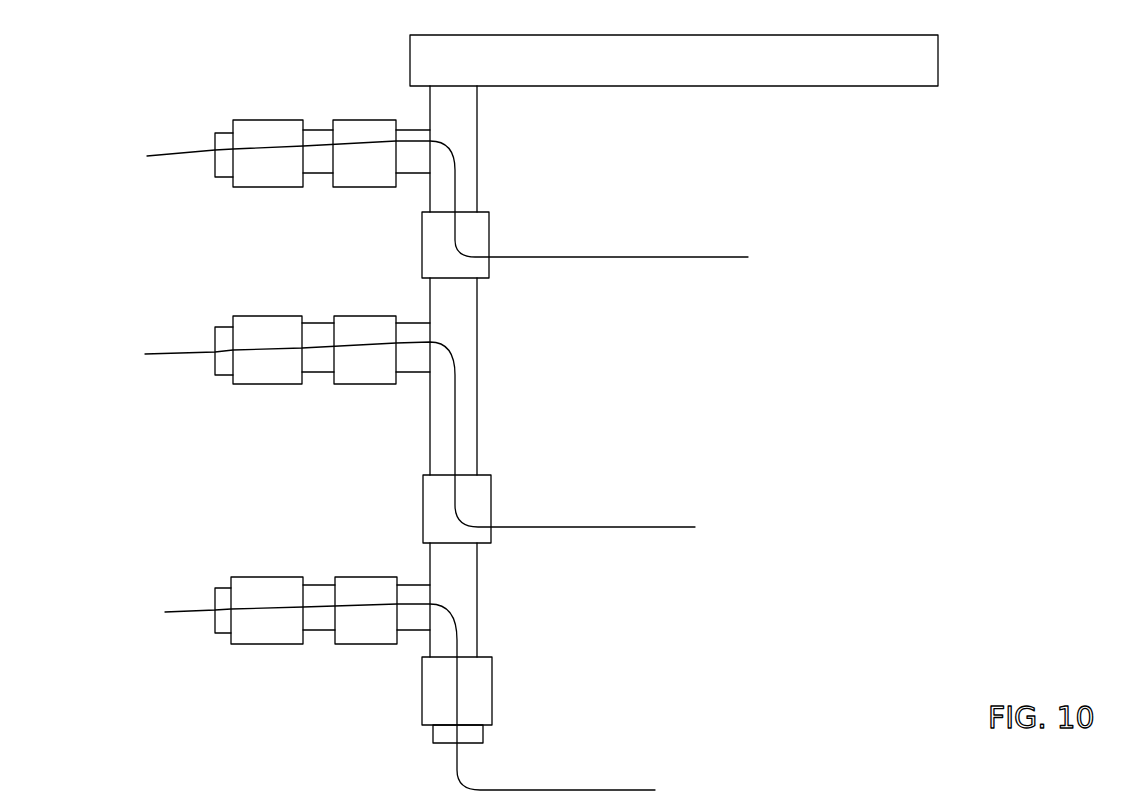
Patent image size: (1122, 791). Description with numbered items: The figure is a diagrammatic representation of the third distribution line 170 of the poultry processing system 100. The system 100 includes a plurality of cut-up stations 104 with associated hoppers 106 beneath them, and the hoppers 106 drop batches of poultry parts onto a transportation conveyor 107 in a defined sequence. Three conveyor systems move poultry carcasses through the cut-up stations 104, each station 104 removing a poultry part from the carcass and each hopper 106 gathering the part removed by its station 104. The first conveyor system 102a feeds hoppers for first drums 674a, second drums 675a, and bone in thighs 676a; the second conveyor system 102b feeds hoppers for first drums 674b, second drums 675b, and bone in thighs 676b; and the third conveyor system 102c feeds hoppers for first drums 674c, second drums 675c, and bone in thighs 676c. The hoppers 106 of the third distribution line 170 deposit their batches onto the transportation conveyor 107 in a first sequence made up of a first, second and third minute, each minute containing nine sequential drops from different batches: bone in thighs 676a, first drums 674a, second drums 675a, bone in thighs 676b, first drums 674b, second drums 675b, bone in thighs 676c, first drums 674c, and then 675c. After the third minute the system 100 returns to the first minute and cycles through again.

The processing system 100 is at (541, 412).
The transportation conveyor 107 is at (509, 135).
The third distribution line 170 is at (812, 377).
The cut-up station 104 is at (515, 648).
The hopper 106 is at (528, 726).
The first conveyor system 102a is at (658, 790).
The second conveyor system 102b is at (650, 522).
The third conveyor system 102c is at (655, 252).
The first drums 674a is at (363, 645).
The first drums 674b is at (357, 385).
The first drums 674c is at (365, 118).
The second drums 675a is at (492, 693).
The second drums 675b is at (490, 500).
The second drums 675c is at (492, 242).
The bone in thighs 676a is at (243, 575).
The bone in thighs 676b is at (265, 315).
The bone in thighs 676c is at (265, 118).